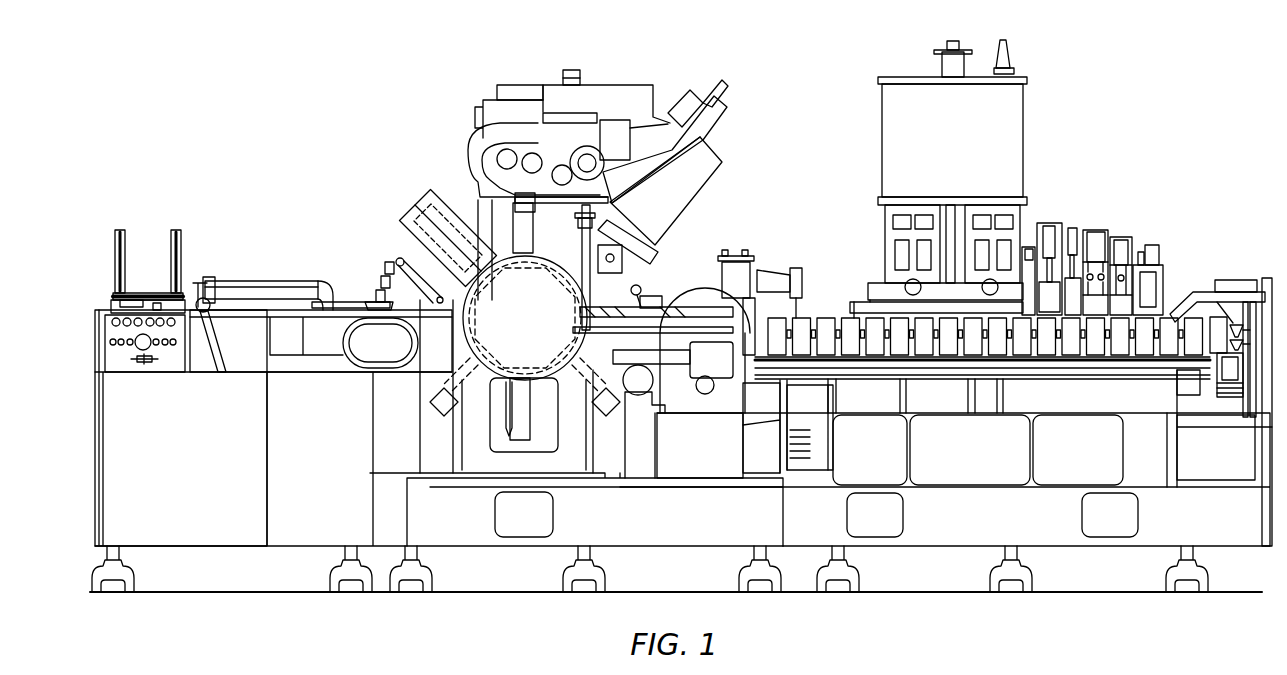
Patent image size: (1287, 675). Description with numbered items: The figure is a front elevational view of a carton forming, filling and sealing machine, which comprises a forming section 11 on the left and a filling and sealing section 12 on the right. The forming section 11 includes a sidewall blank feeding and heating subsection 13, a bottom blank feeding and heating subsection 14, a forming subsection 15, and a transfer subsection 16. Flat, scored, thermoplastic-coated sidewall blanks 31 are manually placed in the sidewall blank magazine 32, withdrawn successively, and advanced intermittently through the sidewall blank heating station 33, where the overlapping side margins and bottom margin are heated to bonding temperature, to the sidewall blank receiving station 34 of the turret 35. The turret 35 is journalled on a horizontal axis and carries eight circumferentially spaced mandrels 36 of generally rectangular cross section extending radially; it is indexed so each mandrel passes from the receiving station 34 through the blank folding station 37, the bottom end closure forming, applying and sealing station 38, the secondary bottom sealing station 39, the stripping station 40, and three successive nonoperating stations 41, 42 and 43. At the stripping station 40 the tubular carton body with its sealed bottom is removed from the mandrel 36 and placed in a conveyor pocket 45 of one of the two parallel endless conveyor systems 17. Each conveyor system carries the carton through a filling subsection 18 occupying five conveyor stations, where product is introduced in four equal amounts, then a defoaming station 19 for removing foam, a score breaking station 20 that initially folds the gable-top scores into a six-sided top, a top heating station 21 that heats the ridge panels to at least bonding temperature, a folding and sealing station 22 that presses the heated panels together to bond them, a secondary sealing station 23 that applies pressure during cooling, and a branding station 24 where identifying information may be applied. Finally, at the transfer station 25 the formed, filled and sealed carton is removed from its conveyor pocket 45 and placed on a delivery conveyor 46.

The forming section 11 is at (672, 223).
The filling and sealing section 12 is at (876, 205).
The sidewall blank feeding and heating subsection 13 is at (237, 270).
The bottom blank feeding and heating subsection 14 is at (470, 140).
The forming subsection 15 is at (460, 187).
The transfer subsection 16 is at (735, 257).
The endless conveyor systems 17 is at (815, 309).
The filling subsection 18 is at (1023, 216).
The defoaming station 19 is at (1025, 246).
The score breaking station 20 is at (1058, 219).
The top heating station 21 is at (1081, 225).
The folding and sealing station 22 is at (1098, 227).
The secondary sealing station 23 is at (1133, 231).
The branding station 24 is at (1161, 239).
The transfer station 25 is at (1178, 293).
The sidewall blanks 31 is at (139, 293).
The sidewall blank magazine 32 is at (196, 264).
The sidewall blank heating station 33 is at (271, 277).
The sidewall blank receiving station 34 is at (418, 292).
The turret 35 is at (513, 329).
The mandrels 36 is at (453, 406).
The blank folding station 37 is at (402, 209).
The bottom end closure forming, applying and sealing station 38 is at (539, 227).
The secondary bottom sealing station 39 is at (632, 266).
The stripping station 40 is at (628, 301).
The nonoperating station 41 is at (612, 410).
The nonoperating station 42 is at (546, 430).
The nonoperating station 43 is at (441, 410).
The conveyor pocket 45 is at (830, 323).
The delivery conveyor 46 is at (1236, 329).